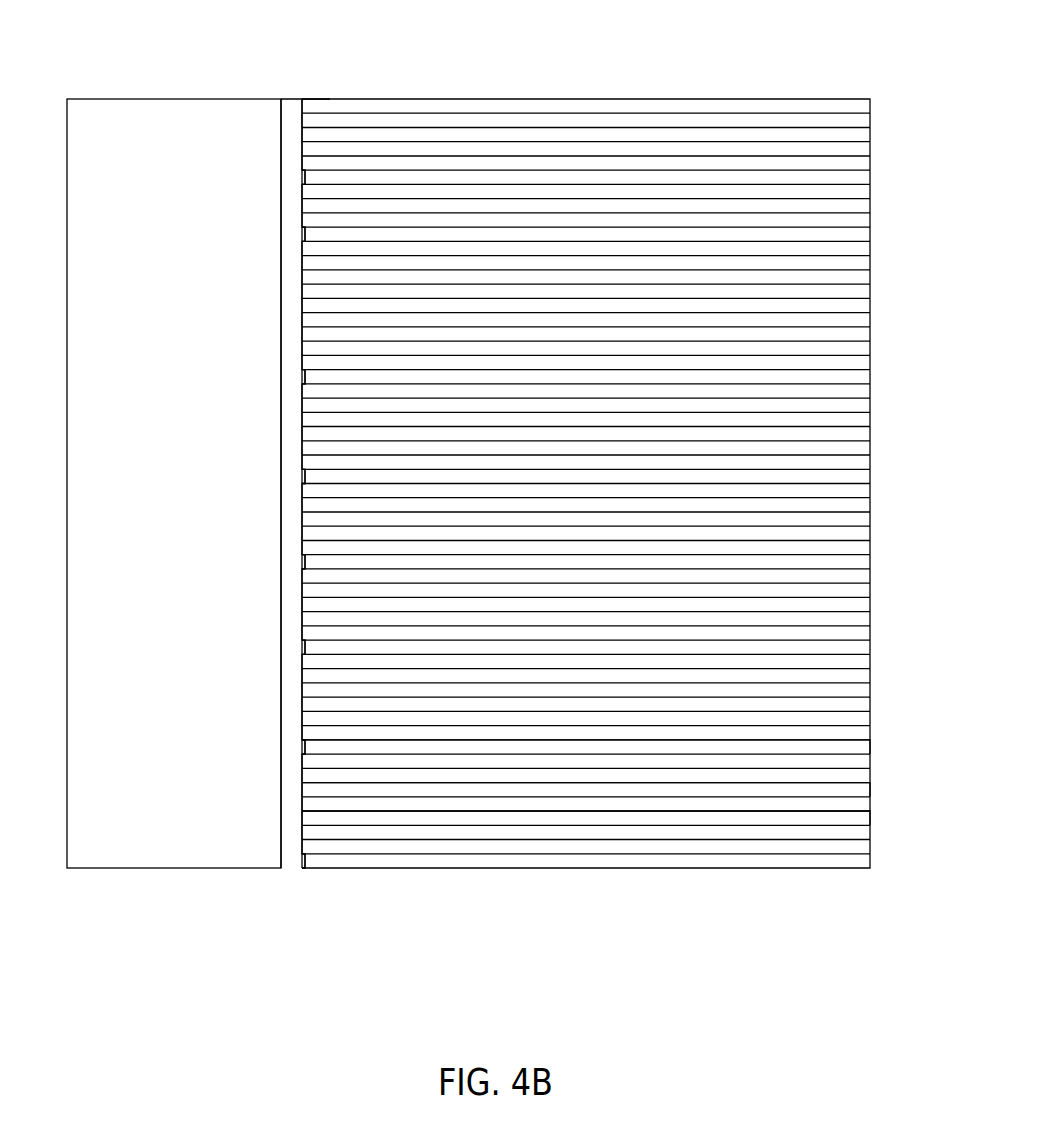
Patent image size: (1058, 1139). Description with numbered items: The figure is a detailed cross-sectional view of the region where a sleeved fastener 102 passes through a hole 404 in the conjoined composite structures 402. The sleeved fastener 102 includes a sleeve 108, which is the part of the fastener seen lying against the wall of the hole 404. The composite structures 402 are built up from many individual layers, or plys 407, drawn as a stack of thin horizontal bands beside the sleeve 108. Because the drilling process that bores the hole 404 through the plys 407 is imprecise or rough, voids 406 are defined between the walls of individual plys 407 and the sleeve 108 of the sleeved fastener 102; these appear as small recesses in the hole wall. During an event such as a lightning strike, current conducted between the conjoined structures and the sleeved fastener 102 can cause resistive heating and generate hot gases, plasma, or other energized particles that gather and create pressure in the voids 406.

The sleeved fastener 102 is at (115, 858).
The sleeve 108 is at (290, 870).
The composite structures 402 is at (752, 903).
The hole 404 is at (298, 72).
The voids 406 is at (290, 177).
The plys 407 is at (883, 750).